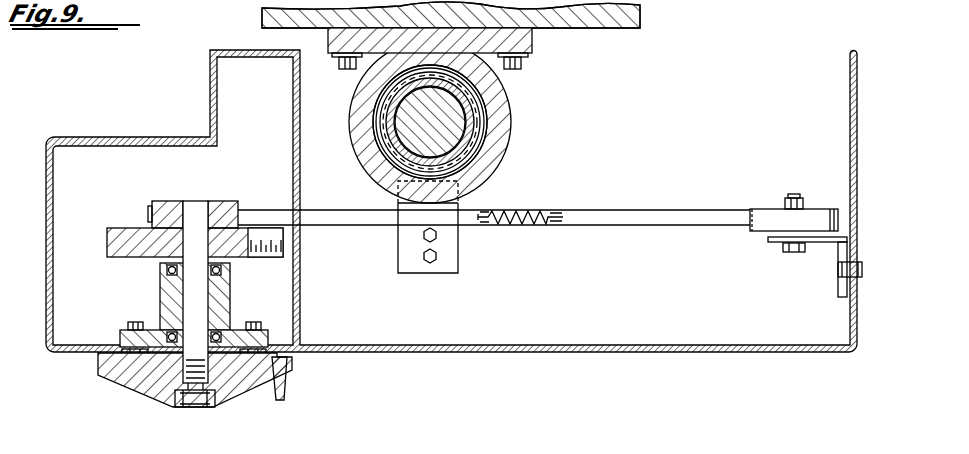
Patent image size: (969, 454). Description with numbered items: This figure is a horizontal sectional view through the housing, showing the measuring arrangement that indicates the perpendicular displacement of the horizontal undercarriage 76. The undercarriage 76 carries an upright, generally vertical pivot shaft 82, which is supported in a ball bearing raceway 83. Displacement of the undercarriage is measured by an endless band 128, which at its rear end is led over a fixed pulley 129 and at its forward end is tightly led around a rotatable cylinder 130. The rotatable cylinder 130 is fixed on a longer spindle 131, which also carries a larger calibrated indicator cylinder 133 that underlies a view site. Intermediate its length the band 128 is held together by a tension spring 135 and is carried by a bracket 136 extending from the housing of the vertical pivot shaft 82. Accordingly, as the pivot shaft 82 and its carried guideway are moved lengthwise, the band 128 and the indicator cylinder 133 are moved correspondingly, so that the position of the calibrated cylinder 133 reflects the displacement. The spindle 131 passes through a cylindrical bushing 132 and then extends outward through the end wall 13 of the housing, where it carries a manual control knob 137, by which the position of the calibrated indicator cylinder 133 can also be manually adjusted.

The end wall 13 is at (557, 353).
The undercarriage 76 is at (585, 29).
The pivot shaft 82 is at (452, 123).
The ball bearing raceway 83 is at (478, 97).
The endless band 128 is at (645, 209).
The fixed pulley 129 is at (774, 210).
The rotatable cylinder 130 is at (168, 201).
The spindle 131 is at (196, 201).
The cylindrical bushing 132 is at (160, 298).
The indicator cylinder 133 is at (107, 248).
The tension spring 135 is at (506, 208).
The bracket 136 is at (458, 254).
The manual control knob 137 is at (98, 362).